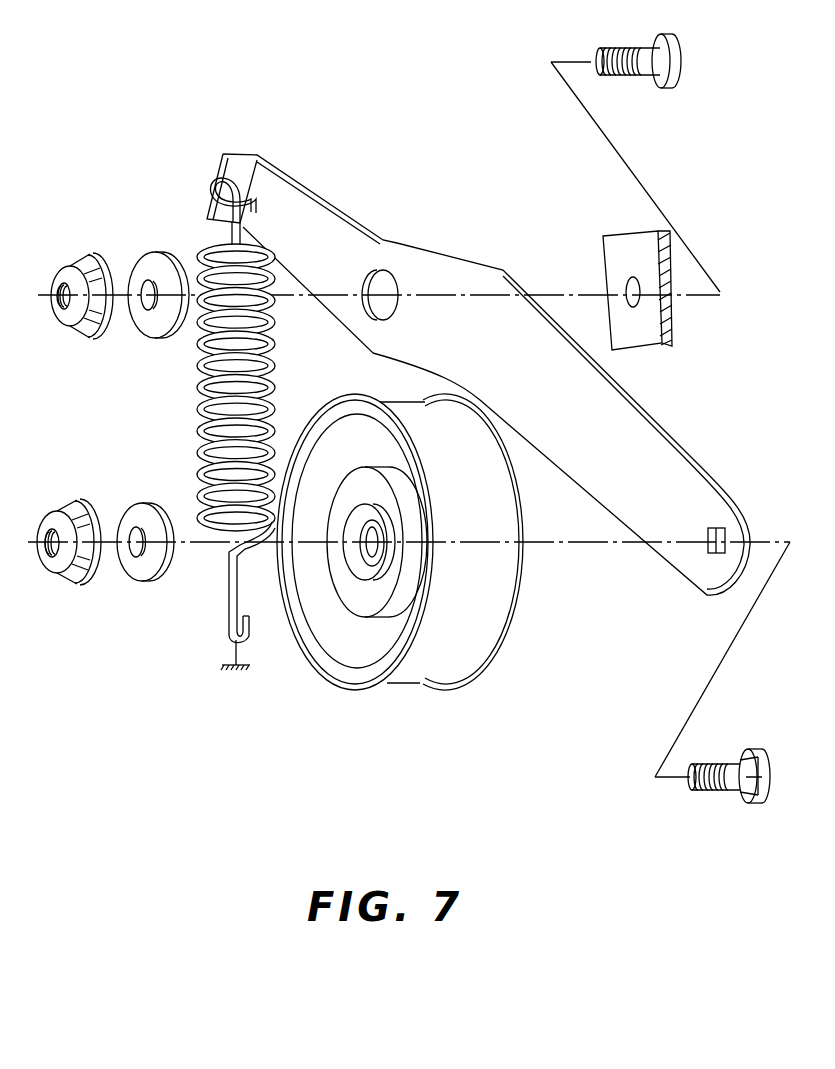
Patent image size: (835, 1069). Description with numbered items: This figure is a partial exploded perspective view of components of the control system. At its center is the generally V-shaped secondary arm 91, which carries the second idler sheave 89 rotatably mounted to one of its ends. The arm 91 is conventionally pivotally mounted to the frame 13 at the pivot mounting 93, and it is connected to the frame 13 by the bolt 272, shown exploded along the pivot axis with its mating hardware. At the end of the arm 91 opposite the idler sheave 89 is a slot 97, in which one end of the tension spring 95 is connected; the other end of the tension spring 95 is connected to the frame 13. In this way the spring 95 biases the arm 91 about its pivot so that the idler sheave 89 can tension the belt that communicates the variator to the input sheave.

The bolt 272 is at (673, 40).
The frame 13 is at (424, 436).
The pivot mounting 93 is at (626, 292).
The arm 91 is at (688, 455).
The tension spring 95 is at (207, 382).
The slot 97 is at (237, 173).
The second idler sheave 89 is at (403, 684).